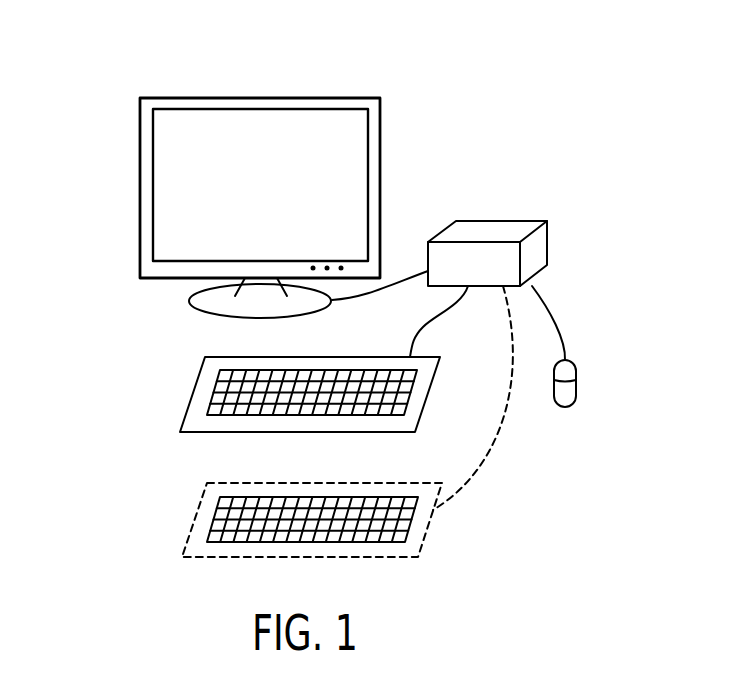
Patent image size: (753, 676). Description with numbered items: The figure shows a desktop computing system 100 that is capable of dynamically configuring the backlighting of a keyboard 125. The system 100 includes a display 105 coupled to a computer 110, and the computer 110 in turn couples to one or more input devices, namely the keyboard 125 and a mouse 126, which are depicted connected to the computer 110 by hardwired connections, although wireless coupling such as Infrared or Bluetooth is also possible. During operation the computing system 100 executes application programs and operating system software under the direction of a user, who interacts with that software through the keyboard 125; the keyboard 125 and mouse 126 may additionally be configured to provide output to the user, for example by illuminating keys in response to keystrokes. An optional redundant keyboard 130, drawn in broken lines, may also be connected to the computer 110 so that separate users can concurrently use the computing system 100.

The desktop computing system 100 is at (94, 143).
The display 105 is at (302, 97).
The computer 110 is at (493, 221).
The keyboard 125 is at (192, 392).
The mouse 126 is at (577, 384).
The redundant keyboard 130 is at (187, 517).